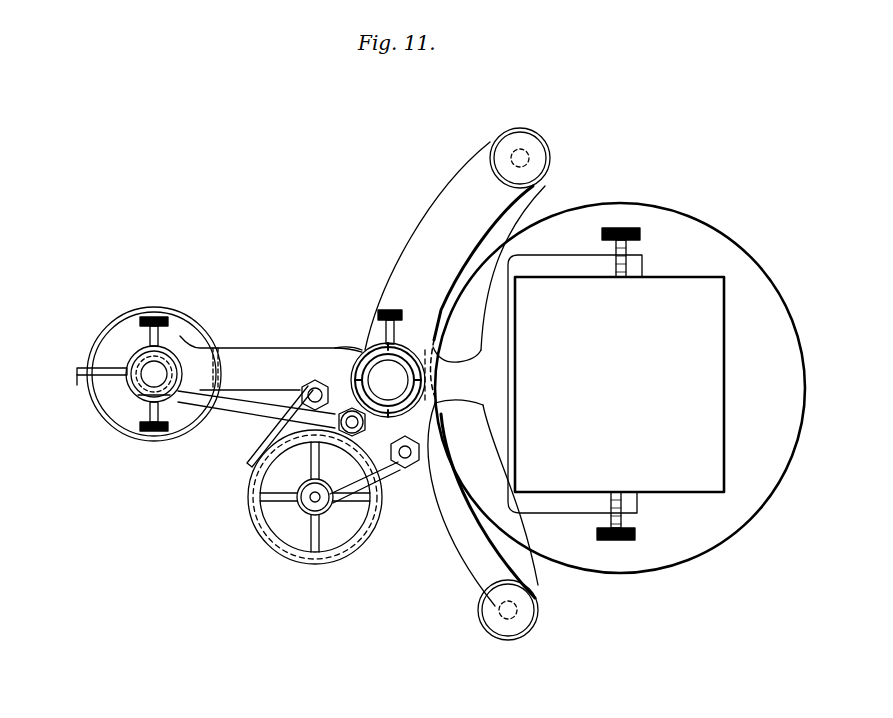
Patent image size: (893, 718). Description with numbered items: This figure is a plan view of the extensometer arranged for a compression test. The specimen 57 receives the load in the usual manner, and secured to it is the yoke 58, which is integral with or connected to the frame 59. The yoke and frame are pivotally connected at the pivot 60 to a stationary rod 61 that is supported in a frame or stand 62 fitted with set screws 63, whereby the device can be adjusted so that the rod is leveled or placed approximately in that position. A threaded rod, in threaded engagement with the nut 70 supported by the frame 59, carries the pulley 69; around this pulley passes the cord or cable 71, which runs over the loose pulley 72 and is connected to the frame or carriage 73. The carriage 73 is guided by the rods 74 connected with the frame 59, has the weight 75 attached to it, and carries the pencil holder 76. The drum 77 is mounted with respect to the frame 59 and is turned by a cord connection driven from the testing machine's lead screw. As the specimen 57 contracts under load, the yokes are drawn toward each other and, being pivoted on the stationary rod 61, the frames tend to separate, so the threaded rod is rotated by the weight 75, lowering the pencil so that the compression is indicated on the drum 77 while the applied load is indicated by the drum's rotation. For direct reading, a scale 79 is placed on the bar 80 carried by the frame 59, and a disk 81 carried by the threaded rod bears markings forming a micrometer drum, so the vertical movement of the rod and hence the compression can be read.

The specimen 57 is at (619, 384).
The yoke 58 is at (620, 388).
The frame 59 is at (271, 364).
The pivot 60 is at (380, 350).
The stationary rod 61 is at (388, 363).
The frame or stand 62 is at (293, 352).
The set screws 63 is at (528, 160).
The pulley 69 is at (138, 396).
The nut 70 is at (134, 366).
The cord or cable 71 is at (268, 414).
The loose pulley 72 is at (400, 470).
The frame or carriage 73 is at (335, 348).
The rods 74 is at (310, 390).
The weight 75 is at (366, 425).
The pencil holder 76 is at (258, 452).
The drum 77 is at (258, 517).
The scale 79 is at (80, 378).
The bar 80 is at (112, 371).
The disk 81 is at (100, 406).